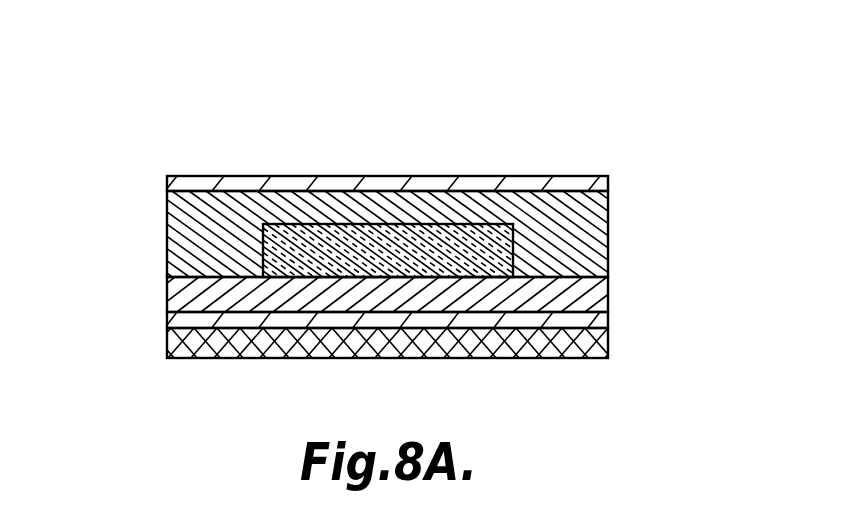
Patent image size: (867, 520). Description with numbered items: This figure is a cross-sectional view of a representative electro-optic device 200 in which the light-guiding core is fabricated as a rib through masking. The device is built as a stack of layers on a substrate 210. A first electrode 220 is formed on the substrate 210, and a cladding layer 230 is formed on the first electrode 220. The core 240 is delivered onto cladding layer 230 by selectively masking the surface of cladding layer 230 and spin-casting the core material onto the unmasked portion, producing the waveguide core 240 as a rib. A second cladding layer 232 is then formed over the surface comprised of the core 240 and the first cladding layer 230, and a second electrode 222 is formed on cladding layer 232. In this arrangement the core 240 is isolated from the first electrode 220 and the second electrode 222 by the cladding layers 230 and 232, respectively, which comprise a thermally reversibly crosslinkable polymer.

The electro-optic device 200 is at (406, 194).
The second electrode 222 is at (608, 180).
The cladding layer 232 is at (608, 221).
The core 240 is at (318, 176).
The cladding layer 230 is at (608, 285).
The first electrode 220 is at (608, 317).
The substrate 210 is at (608, 341).